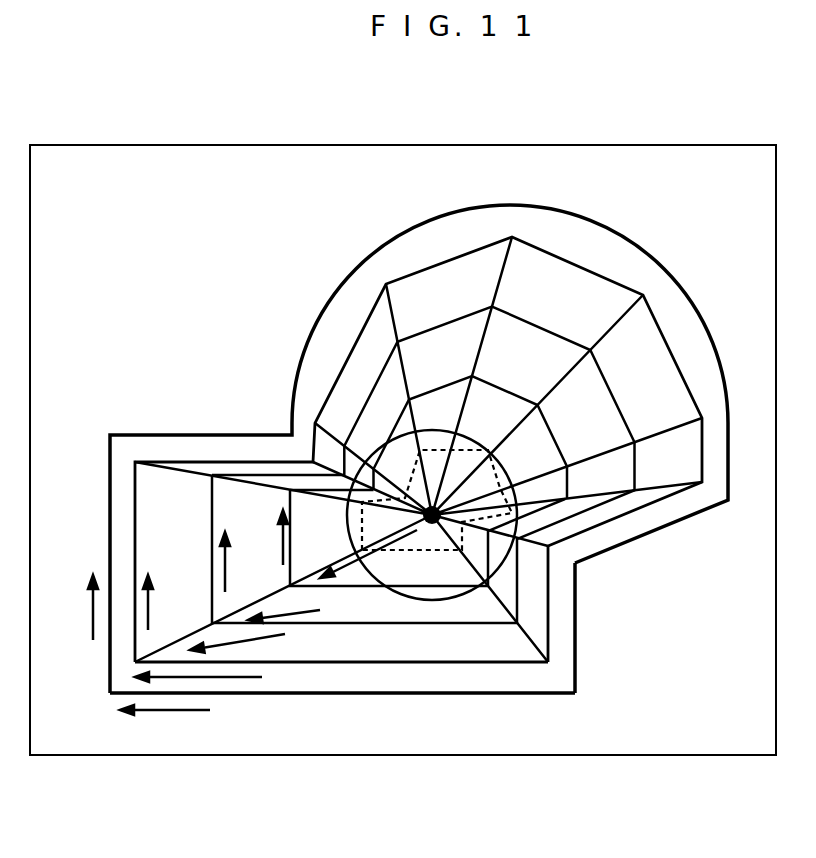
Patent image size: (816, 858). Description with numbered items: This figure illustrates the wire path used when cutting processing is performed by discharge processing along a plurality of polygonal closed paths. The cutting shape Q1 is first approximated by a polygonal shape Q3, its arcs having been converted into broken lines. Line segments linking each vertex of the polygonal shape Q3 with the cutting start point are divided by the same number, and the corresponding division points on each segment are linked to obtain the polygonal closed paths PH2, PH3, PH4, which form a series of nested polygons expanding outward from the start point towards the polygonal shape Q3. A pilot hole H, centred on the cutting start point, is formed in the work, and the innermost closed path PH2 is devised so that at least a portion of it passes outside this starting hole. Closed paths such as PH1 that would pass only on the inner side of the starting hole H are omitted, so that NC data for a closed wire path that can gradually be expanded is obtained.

The cutting shape Q1 is at (300, 356).
The polygonal shape Q3 is at (440, 262).
The pilot hole H is at (425, 601).
The projection plane 1 PH1 is at (495, 583).
The innermost closed path PH2 is at (520, 603).
The polygonal closed path PH3 is at (550, 638).
The polygonal closed path PH4 is at (573, 660).